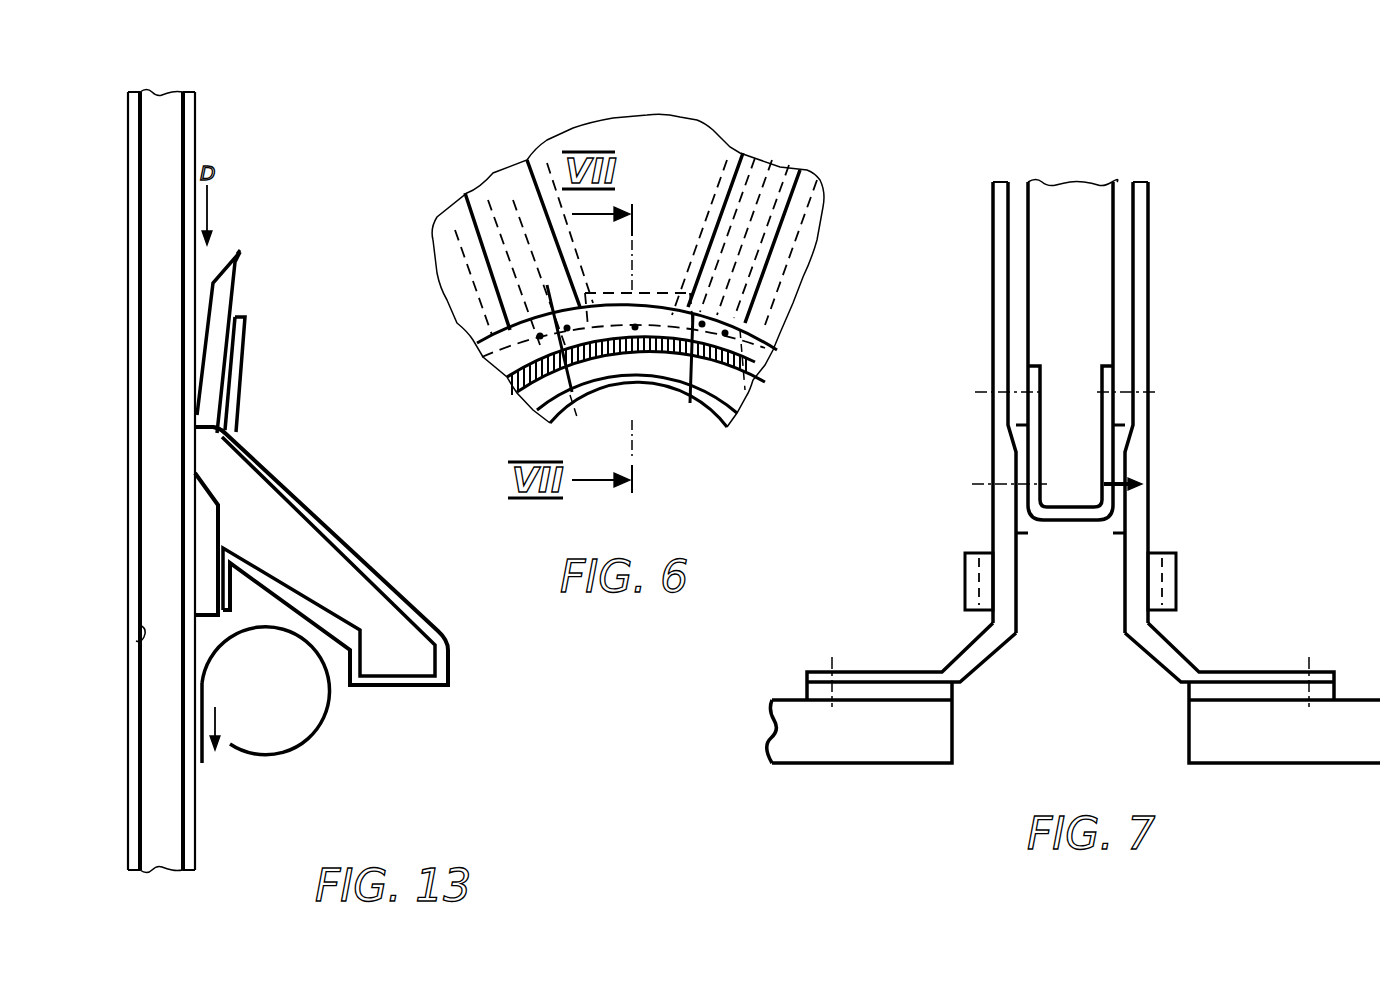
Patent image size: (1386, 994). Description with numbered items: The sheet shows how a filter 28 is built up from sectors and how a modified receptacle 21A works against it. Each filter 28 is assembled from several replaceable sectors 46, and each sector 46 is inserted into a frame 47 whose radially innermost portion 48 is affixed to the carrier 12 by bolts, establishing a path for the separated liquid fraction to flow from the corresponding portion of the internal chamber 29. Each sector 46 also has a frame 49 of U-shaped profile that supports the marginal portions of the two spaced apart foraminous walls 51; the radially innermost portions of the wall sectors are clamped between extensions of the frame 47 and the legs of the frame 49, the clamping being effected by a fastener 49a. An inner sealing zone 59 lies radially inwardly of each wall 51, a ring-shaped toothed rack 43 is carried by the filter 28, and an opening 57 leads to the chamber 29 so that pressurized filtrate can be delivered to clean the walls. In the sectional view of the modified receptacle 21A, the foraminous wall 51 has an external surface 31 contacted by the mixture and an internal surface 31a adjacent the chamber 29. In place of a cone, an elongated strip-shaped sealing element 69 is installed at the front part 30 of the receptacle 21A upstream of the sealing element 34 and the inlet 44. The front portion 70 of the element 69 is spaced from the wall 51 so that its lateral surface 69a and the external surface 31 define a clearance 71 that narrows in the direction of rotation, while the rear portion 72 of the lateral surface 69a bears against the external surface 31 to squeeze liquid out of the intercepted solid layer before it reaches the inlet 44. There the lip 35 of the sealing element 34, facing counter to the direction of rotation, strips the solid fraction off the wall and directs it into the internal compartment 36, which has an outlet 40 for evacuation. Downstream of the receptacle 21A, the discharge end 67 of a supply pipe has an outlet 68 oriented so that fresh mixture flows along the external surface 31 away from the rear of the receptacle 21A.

In FIG. 6, the carrier 12 is at (697, 407).
In FIG. 7, the carrier 12 is at (882, 735).
In FIG. 13, the modified receptacle 21A is at (335, 535).
In FIG. 13, the filter 28 is at (216, 159).
In FIG. 13, the internal chamber 29 is at (168, 97).
In FIG. 7, the internal chamber 29 is at (1077, 203).
In FIG. 13, the front part 30 is at (247, 340).
In FIG. 13, the external surface 31 is at (130, 848).
In FIG. 7, the external surface 31 is at (993, 280).
In FIG. 13, the internal surface 31a is at (181, 650).
In FIG. 13, the sealing element 34 is at (207, 557).
In FIG. 13, the lip 35 is at (193, 467).
In FIG. 13, the internal compartment 36 is at (268, 507).
In FIG. 13, the outlet 40 is at (446, 657).
In FIG. 6, the toothed rack 43 is at (763, 380).
In FIG. 7, the toothed rack 43 is at (1173, 563).
In FIG. 13, the inlet 44 is at (217, 457).
In FIG. 6, the sector 46 is at (695, 112).
In FIG. 6, the frame 47 is at (798, 173).
In FIG. 6, the radially innermost portion 48 is at (600, 307).
In FIG. 7, the radially innermost portion 48 is at (1162, 647).
In FIG. 7, the frame 49 is at (1067, 522).
In FIG. 7, the fastener 49a is at (1145, 483).
In FIG. 13, the foraminous wall 51 is at (137, 117).
In FIG. 7, the foraminous wall 51 is at (1000, 220).
In FIG. 6, the opening 57 is at (650, 397).
In FIG. 7, the opening 57 is at (1007, 727).
In FIG. 6, the inner sealing zone 59 is at (640, 313).
In FIG. 7, the inner sealing zone 59 is at (1002, 522).
In FIG. 13, the discharge end 67 is at (312, 725).
In FIG. 13, the outlet 68 is at (212, 753).
In FIG. 13, the strip-shaped sealing element 69 is at (227, 285).
In FIG. 13, the lateral surface 69a is at (205, 325).
In FIG. 13, the front portion 70 is at (226, 268).
In FIG. 13, the clearance 71 is at (215, 253).
In FIG. 13, the rear portion 72 is at (192, 415).